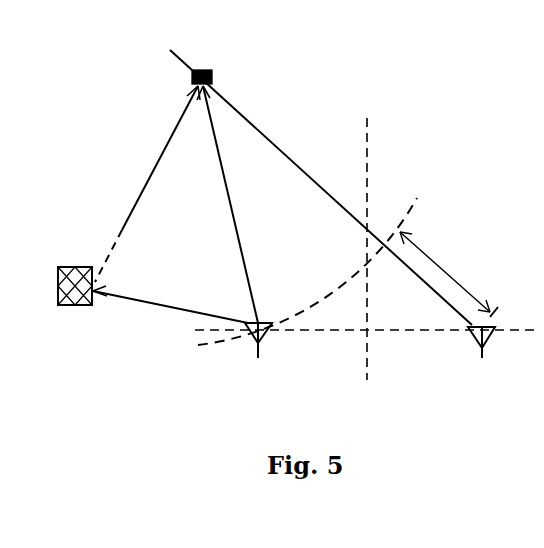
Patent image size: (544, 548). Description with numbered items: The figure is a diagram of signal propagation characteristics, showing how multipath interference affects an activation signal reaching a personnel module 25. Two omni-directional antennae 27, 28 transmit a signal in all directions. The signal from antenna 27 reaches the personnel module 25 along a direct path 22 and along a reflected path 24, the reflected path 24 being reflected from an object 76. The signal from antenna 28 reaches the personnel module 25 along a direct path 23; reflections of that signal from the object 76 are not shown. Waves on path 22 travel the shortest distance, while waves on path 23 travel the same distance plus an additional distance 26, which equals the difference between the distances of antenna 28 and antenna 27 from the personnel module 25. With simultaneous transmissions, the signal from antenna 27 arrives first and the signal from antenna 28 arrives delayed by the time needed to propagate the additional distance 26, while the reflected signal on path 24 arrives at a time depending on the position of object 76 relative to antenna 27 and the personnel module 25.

The personnel module 25 is at (228, 82).
The direct path 23 is at (321, 187).
The direct path 22 is at (233, 204).
The reflected path 24 is at (170, 204).
The object 76 is at (73, 271).
The omni-directional antenna 27 is at (257, 354).
The omni-directional antenna 28 is at (483, 356).
The additional distance 26 is at (449, 274).